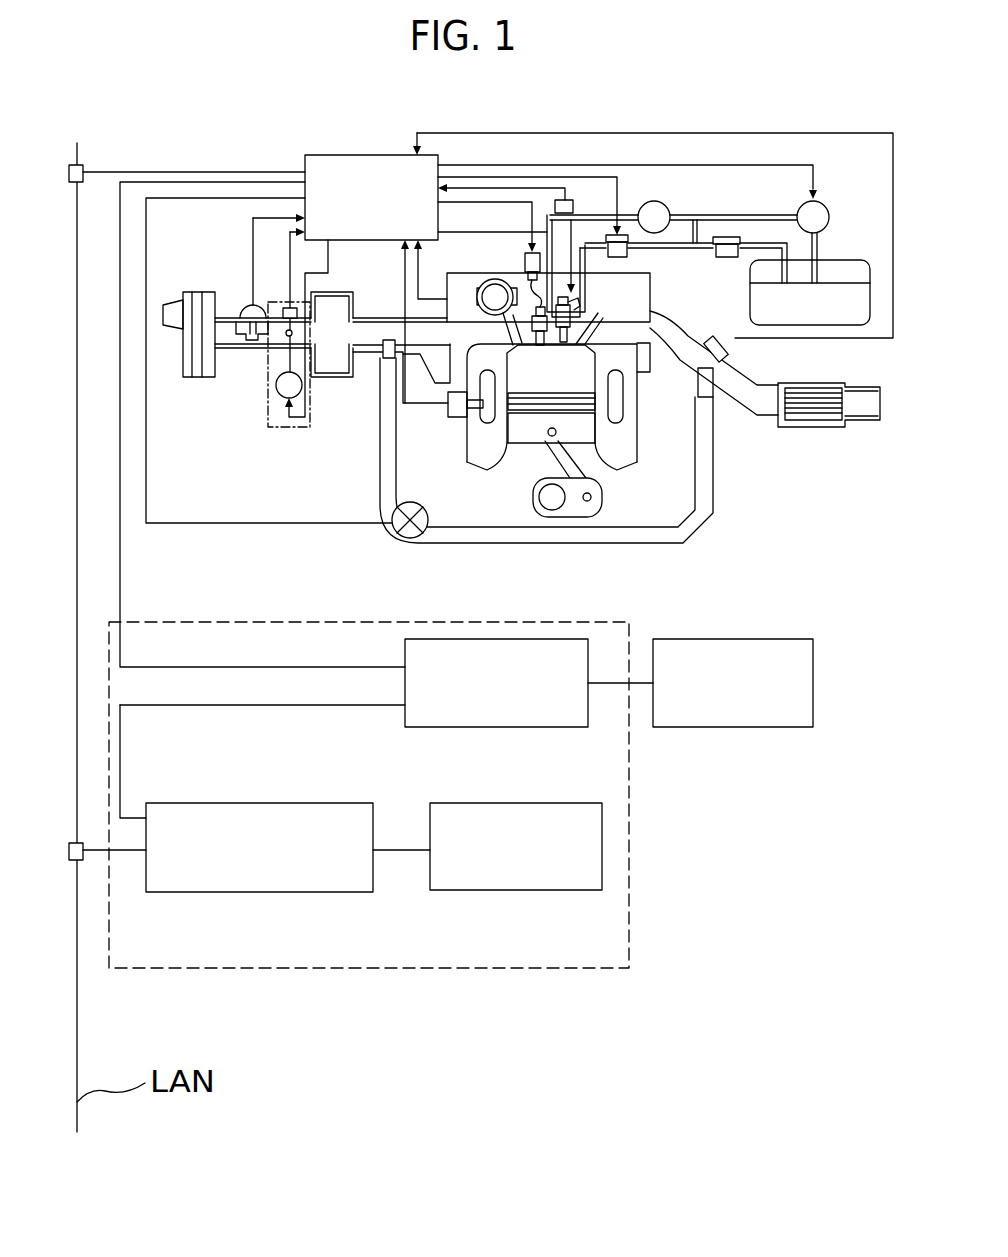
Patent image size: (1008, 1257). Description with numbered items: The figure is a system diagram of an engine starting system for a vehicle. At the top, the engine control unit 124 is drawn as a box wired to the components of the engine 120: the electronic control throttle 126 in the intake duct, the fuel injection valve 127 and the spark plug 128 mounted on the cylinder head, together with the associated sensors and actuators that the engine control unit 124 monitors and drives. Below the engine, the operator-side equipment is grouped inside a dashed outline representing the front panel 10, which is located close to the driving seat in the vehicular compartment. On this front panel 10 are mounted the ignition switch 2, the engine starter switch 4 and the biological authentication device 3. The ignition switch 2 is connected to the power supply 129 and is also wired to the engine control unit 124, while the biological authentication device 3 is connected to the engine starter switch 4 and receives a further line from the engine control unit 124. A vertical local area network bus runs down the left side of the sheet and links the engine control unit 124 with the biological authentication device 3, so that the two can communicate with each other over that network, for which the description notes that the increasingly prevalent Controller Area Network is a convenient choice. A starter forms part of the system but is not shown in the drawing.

The engine control unit 124 is at (335, 155).
The engine 120 is at (593, 360).
The electronic control throttle 126 is at (278, 413).
The fuel injection valve 127 is at (567, 352).
The spark plug 128 is at (533, 352).
The power supply 129 is at (780, 639).
The front panel 10 is at (240, 622).
The ignition switch 2 is at (520, 639).
The biological authentication device 3 is at (287, 803).
The engine starter switch 4 is at (602, 843).